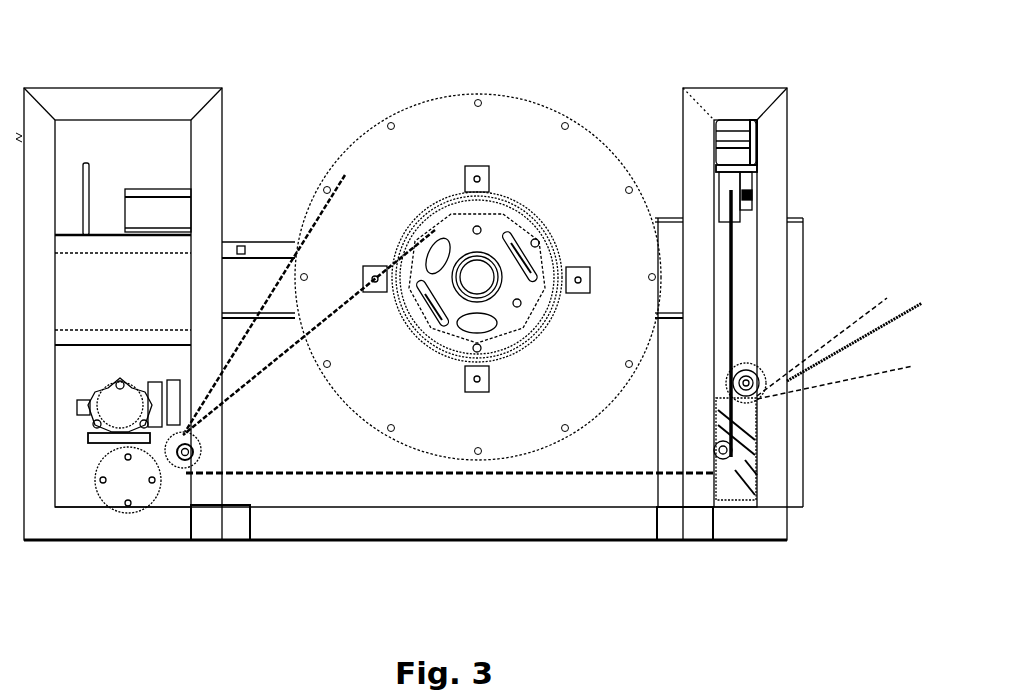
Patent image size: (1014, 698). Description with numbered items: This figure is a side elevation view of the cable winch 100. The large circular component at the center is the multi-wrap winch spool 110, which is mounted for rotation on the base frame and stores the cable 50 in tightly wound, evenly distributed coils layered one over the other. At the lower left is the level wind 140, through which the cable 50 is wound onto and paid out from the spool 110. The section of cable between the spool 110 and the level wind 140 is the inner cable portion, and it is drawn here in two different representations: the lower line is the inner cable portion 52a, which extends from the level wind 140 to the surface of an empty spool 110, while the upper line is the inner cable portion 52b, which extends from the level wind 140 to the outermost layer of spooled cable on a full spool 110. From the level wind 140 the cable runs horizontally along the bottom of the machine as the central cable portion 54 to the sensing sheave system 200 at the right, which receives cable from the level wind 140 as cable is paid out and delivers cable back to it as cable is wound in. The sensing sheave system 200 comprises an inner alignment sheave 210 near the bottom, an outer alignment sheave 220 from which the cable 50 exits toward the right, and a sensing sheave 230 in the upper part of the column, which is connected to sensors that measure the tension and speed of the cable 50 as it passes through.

The cable winch 100 is at (478, 305).
The multi-wrap winch spool 110 is at (566, 368).
The level wind 140 is at (170, 484).
The inner cable portion 52a is at (273, 360).
The inner cable portion 52b is at (273, 288).
The central cable portion 54 is at (495, 477).
The sensing sheave system 200 is at (836, 123).
The inner alignment sheave 210 is at (720, 472).
The outer alignment sheave 220 is at (753, 360).
The sensing sheave 230 is at (743, 213).
The cable 50 is at (865, 338).